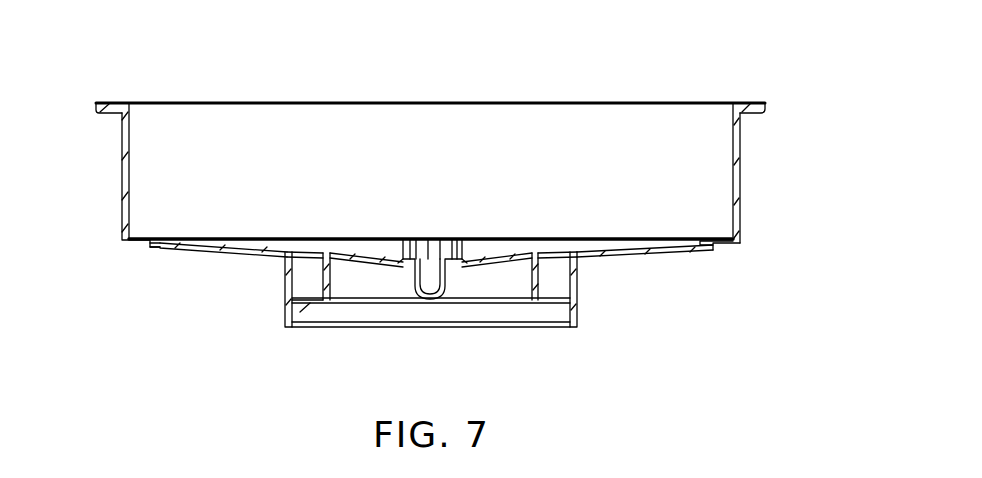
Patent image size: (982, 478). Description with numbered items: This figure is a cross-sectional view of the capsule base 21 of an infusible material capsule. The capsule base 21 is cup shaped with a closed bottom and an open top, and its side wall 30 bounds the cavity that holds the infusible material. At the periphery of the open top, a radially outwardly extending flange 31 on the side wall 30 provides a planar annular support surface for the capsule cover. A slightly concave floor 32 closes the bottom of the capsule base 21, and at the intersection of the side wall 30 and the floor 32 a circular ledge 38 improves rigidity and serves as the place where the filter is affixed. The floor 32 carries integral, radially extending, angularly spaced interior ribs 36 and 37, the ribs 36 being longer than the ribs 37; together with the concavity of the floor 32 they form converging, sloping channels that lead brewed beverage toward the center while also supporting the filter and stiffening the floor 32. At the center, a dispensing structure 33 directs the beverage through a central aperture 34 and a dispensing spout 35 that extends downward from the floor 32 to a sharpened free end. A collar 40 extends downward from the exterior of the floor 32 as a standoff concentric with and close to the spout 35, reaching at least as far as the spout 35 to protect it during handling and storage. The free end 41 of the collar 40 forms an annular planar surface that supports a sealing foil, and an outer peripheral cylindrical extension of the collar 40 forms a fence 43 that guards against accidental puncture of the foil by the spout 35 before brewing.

The capsule base 21 is at (612, 76).
The side wall 30 is at (742, 143).
The flange 31 is at (753, 100).
The floor 32 is at (680, 254).
The central dispensing structure 33 is at (361, 332).
The central aperture 34 is at (437, 290).
The dispensing spout 35 is at (418, 278).
The interior ribs 36 is at (595, 247).
The interior ribs 37 is at (250, 247).
The circular ledge 38 is at (127, 237).
The collar 40 is at (290, 282).
The free end 41 is at (307, 306).
The fence 43 is at (578, 304).